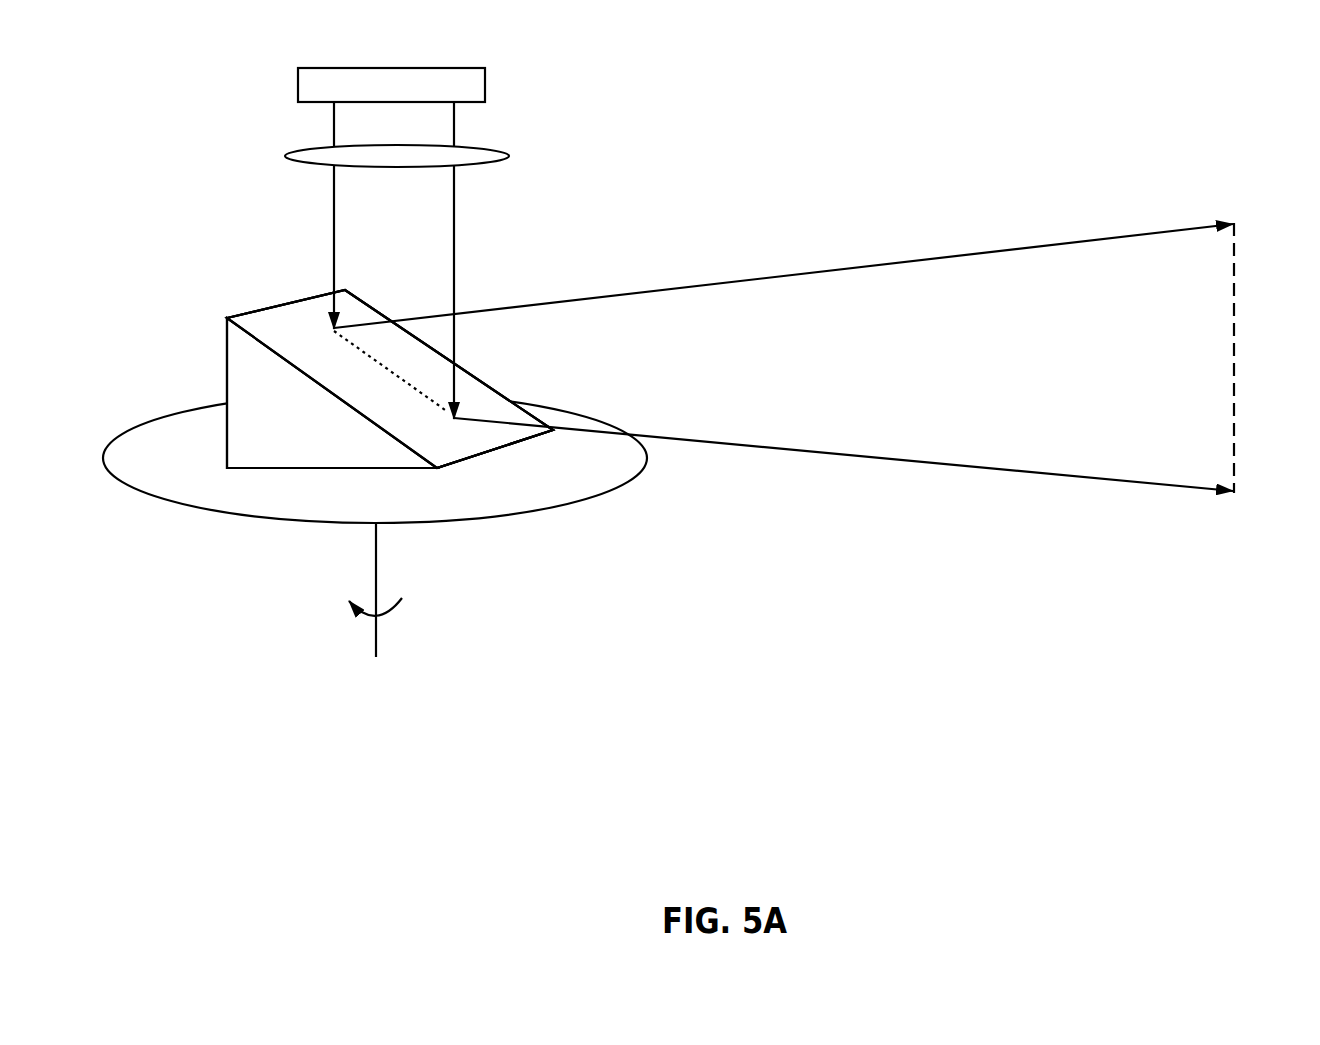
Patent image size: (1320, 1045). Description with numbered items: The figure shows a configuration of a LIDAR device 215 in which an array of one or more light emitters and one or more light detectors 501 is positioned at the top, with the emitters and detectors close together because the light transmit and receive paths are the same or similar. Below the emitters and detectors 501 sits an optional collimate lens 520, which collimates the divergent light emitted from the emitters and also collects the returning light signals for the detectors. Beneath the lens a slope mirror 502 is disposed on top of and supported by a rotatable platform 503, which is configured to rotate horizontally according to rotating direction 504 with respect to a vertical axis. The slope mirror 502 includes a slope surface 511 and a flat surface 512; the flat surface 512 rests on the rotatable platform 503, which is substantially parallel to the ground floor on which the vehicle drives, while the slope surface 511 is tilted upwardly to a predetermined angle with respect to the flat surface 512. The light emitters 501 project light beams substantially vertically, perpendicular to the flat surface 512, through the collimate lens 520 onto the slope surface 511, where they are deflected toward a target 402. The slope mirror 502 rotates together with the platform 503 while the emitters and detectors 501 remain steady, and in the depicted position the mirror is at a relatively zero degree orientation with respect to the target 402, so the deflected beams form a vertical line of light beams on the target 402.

The LIDAR device 215 is at (209, 106).
The light emitters and light detectors 501 is at (485, 92).
The collimate lens 520 is at (509, 156).
The slope surface 511 is at (280, 332).
The slope mirror 502 is at (295, 448).
The rotatable platform 503 is at (187, 466).
The flat surface 512 is at (370, 468).
The rotating direction 504 is at (395, 613).
The target 402 is at (1238, 310).